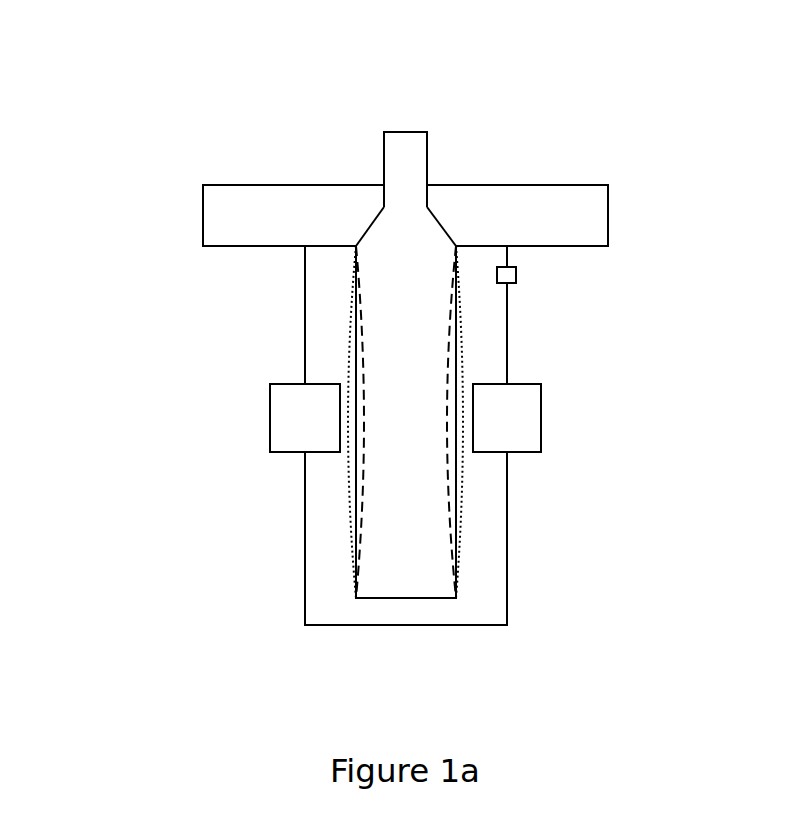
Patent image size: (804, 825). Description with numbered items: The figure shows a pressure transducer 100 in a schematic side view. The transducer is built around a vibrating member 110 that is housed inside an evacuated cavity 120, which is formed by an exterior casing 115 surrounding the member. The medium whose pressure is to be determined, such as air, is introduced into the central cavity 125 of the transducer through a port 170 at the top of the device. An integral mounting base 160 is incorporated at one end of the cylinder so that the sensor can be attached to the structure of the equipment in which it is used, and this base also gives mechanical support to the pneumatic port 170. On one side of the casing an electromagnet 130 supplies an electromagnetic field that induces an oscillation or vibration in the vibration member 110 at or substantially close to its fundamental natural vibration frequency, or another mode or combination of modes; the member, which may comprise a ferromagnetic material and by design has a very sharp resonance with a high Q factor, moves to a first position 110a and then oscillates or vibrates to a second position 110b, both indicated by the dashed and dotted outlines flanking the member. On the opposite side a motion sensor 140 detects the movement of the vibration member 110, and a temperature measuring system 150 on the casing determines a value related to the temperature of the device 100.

The pressure transducer 100 is at (172, 171).
The vibrating member 110 is at (410, 612).
The first position 110a is at (343, 495).
The second position 110b is at (482, 524).
The exterior casing 115 is at (522, 326).
The evacuated cavity 120 is at (493, 591).
The central cavity 125 is at (374, 549).
The electromagnet 130 is at (276, 424).
The motion sensor 140 is at (531, 423).
The temperature measuring system 150 is at (532, 276).
The integral mounting base 160 is at (300, 237).
The port 170 is at (412, 116).